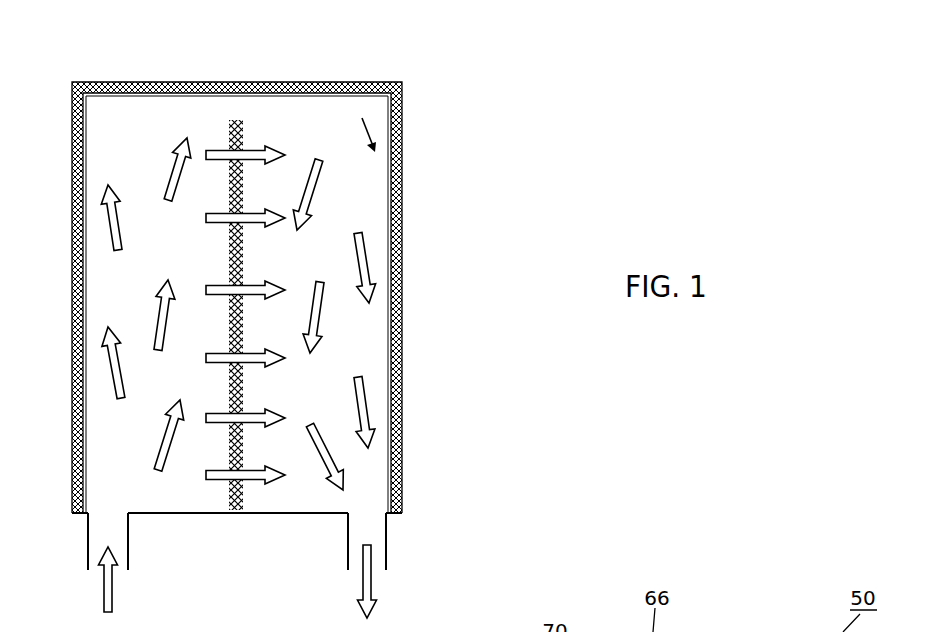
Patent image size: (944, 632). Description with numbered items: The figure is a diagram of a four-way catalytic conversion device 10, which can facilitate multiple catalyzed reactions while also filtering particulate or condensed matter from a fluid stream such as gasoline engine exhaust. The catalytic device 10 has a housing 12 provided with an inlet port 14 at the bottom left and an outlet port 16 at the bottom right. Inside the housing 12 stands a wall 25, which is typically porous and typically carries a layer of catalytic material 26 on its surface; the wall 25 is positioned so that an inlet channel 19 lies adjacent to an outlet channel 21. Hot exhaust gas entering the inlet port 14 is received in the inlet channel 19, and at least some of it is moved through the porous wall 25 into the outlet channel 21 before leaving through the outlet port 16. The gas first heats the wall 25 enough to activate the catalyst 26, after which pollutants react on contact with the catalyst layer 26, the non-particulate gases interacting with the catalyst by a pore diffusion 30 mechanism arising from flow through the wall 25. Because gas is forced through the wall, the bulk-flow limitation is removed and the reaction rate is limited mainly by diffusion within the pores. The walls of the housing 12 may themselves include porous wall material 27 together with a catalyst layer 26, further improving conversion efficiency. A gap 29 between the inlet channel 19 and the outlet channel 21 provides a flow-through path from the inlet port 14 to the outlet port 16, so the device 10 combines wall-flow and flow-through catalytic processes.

The catalytic conversion device 10 is at (571, 67).
The housing 12 is at (402, 203).
The inlet port 14 is at (128, 553).
The outlet port 16 is at (386, 533).
The inlet channel 19 is at (125, 265).
The outlet channel 21 is at (350, 327).
The wall 25 is at (240, 507).
The catalytic material layer 26 is at (388, 132).
The porous wall material 27 is at (400, 240).
The gap 29 is at (236, 104).
The pore diffusion 30 is at (241, 131).